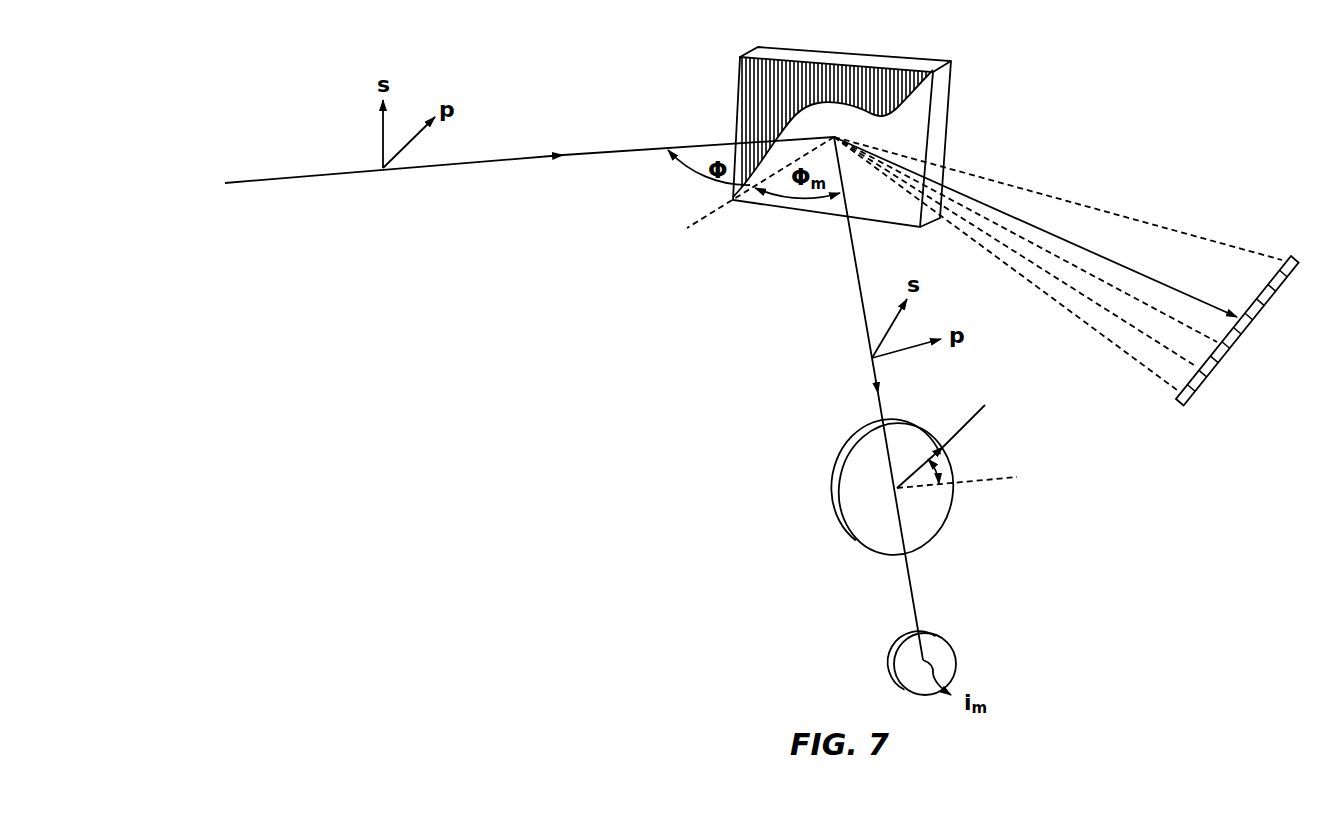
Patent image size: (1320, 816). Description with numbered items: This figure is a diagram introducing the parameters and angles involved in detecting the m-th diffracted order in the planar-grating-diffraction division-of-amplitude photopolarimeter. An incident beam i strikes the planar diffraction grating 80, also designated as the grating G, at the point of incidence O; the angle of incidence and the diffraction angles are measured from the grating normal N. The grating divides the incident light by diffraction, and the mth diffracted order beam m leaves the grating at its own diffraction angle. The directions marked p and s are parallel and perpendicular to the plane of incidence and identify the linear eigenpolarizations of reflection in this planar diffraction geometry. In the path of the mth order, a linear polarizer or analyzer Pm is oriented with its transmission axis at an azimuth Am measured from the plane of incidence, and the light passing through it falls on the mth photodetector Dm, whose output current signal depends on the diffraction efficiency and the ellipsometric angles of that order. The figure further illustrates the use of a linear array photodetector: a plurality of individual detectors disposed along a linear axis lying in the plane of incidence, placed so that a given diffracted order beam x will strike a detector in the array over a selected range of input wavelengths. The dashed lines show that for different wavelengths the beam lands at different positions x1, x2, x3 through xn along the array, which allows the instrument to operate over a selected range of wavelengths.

The planar diffraction grating 80 is at (808, 48).
The grating G is at (842, 127).
The point of incidence O is at (832, 126).
The grating normal N is at (751, 192).
The incident beam i is at (529, 154).
The mth diffracted order beam m is at (878, 398).
The diffracted order beam x is at (1035, 227).
The diffracted beam position for wavelength n xn is at (1058, 198).
The diffracted beam position for wavelength 1 x1 is at (1005, 263).
The diffracted beam position for wavelength 2 x2 is at (1016, 252).
The diffracted beam position for wavelength 3 x3 is at (1025, 239).
The linear polarizer Pm is at (885, 487).
The azimuth of polarizer transmission axis Am is at (957, 446).
The mth photodetector Dm is at (912, 666).